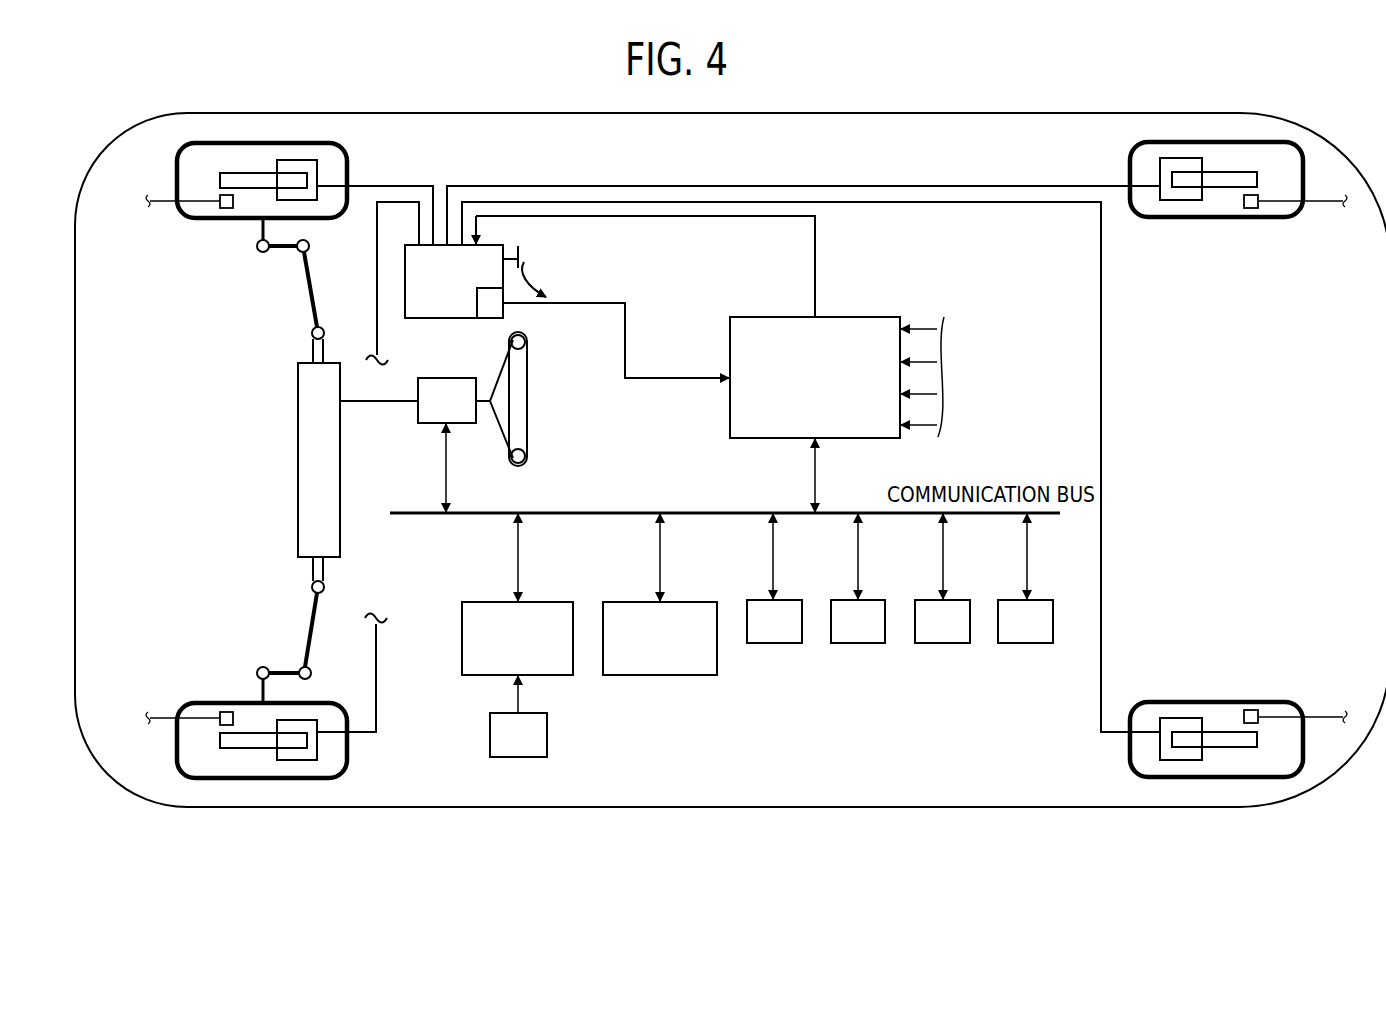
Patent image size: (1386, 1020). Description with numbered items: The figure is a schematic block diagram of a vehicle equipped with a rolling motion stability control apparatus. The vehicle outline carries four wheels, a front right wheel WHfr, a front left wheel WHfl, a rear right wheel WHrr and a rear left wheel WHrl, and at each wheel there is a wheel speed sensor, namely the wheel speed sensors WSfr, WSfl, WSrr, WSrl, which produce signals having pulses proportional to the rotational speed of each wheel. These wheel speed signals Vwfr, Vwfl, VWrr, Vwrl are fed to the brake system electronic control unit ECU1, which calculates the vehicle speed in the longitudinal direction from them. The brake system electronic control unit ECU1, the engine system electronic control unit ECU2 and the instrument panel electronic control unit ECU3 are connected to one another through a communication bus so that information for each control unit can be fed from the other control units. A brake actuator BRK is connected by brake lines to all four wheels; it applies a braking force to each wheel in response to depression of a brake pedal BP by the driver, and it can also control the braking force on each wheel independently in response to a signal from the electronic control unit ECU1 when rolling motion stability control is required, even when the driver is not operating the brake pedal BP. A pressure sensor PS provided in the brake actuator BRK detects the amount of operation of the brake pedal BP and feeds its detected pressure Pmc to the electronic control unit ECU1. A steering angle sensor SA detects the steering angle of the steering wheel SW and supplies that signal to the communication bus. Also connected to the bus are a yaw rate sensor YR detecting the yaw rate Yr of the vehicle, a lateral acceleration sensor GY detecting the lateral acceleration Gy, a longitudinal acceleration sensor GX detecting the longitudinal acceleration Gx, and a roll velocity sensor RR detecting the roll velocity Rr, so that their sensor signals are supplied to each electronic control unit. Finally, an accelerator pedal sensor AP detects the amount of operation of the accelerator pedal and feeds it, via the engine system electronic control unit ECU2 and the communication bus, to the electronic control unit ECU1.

The front right wheel WHfr is at (262, 165).
The front left wheel WHfl is at (262, 755).
The rear right wheel WHrr is at (1216, 167).
The rear left wheel WHrl is at (1216, 753).
The front right wheel speed sensor WSfr is at (232, 210).
The front left wheel speed sensor WSfl is at (233, 714).
The rear right wheel speed sensor WSrr is at (1248, 210).
The rear left wheel speed sensor WSrl is at (1248, 710).
The brake actuator BRK is at (454, 281).
The brake pedal BP is at (524, 262).
The pressure sensor PS is at (488, 313).
The detected pressure Pmc is at (616, 340).
The steering angle sensor SA is at (447, 400).
The steering wheel SW is at (531, 420).
The brake system electronic control unit ECU1 is at (815, 414).
The engine system electronic control unit ECU2 is at (517, 594).
The instrument panel electronic control unit ECU3 is at (660, 594).
The accelerator pedal sensor AP is at (518, 716).
The yaw rate sensor YR is at (774, 621).
The lateral acceleration sensor GY is at (858, 621).
The longitudinal acceleration sensor GX is at (942, 621).
The roll velocity sensor RR is at (1025, 621).
The yaw rate Yr is at (789, 556).
The vehicle lateral acceleration Gy is at (877, 556).
The vehicle longitudinal acceleration Gx is at (962, 556).
The roll velocity Rr is at (1044, 556).
The front right wheel speed signal Vwfr is at (954, 329).
The front left wheel speed signal Vwfl is at (953, 362).
The rear right wheel speed signal VWrr is at (956, 395).
The rear left wheel speed signal Vwrl is at (953, 429).